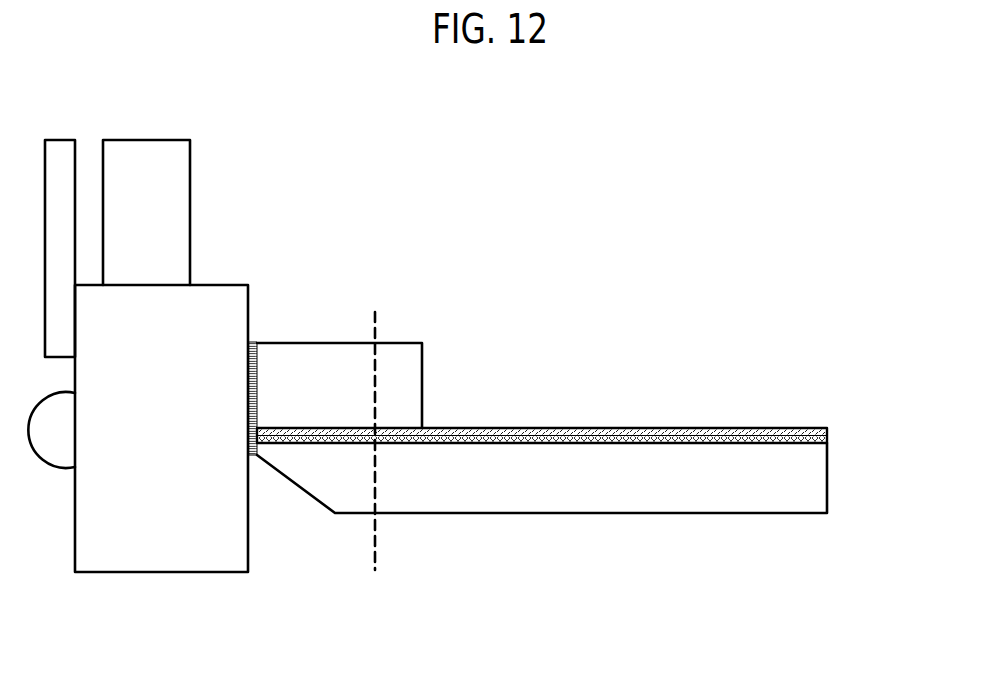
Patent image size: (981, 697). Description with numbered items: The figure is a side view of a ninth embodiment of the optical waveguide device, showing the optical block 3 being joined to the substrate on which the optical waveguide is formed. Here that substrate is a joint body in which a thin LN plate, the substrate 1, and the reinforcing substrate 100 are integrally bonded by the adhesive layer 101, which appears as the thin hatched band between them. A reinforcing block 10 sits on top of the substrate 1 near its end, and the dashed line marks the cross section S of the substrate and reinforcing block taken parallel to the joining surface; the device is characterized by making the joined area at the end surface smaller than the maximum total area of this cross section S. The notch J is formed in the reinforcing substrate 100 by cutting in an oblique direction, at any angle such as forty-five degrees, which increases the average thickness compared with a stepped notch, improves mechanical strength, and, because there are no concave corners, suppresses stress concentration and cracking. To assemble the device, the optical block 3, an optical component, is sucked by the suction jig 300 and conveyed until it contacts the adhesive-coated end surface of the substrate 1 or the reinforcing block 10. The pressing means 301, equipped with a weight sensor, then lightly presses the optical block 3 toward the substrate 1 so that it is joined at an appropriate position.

The substrate 1 is at (680, 426).
The optical block 3 is at (147, 528).
The reinforcing block 10 is at (413, 362).
The reinforcing substrate 100 is at (610, 483).
The adhesive layer 101 is at (829, 435).
The suction jig 300 is at (152, 170).
The pressing means 301 is at (60, 170).
The cross section S is at (375, 424).
The notch J is at (277, 505).